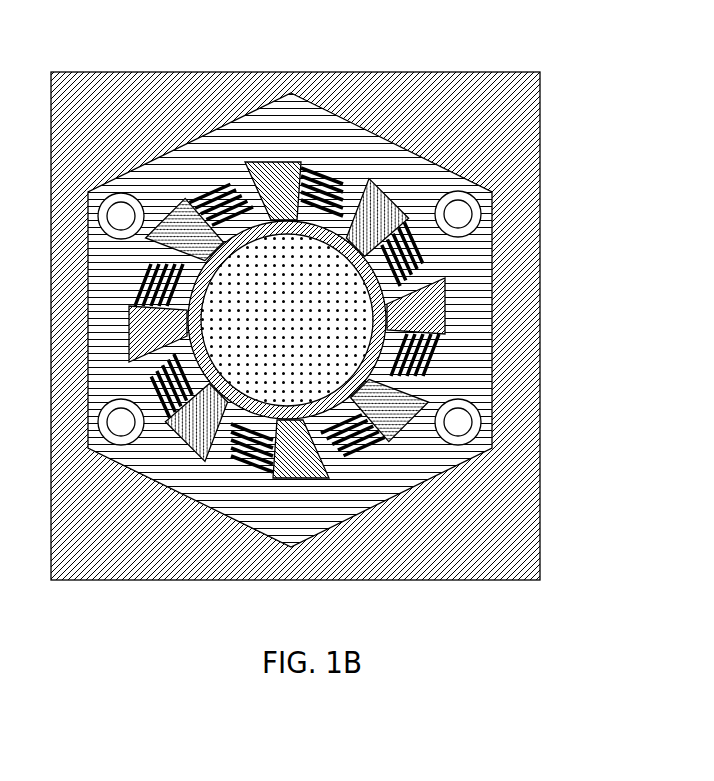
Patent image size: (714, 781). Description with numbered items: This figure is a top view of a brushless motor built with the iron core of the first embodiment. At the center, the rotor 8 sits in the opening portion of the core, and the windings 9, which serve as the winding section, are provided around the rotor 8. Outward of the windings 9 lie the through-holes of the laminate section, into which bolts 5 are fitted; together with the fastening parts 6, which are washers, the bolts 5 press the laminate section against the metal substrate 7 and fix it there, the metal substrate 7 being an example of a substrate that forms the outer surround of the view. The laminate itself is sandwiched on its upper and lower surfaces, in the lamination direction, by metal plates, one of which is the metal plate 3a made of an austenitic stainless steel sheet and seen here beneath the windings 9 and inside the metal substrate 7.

The metal plate 3a is at (473, 315).
The bolt 5 is at (487, 193).
The fastening part 6 is at (492, 219).
The metal substrate 7 is at (497, 488).
The rotor 8 is at (275, 268).
The winding 9 is at (229, 185).